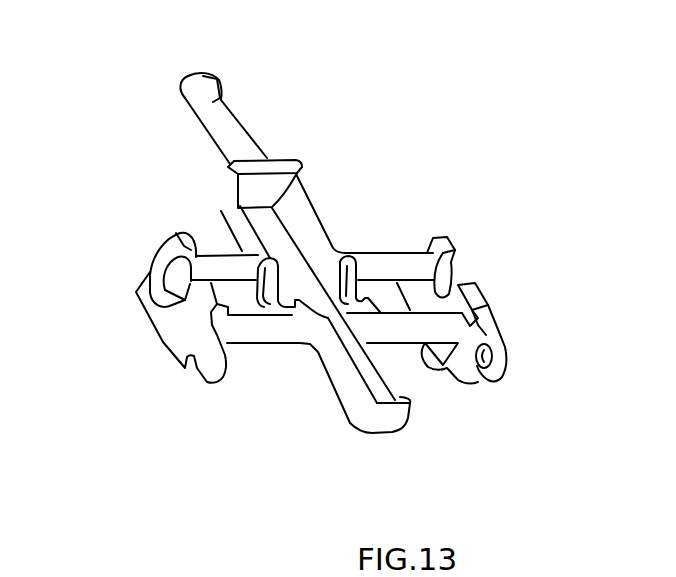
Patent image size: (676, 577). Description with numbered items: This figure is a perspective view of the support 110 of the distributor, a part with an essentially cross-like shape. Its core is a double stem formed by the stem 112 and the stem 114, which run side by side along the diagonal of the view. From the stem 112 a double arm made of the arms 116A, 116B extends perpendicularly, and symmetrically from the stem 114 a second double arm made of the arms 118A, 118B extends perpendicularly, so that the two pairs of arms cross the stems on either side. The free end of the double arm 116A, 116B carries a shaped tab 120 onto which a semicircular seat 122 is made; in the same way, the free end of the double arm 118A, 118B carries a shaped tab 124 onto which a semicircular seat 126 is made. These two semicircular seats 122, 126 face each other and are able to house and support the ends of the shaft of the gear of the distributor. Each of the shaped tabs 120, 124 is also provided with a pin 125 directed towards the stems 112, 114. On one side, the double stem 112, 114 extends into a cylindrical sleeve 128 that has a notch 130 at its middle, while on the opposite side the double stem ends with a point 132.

The support 110 is at (349, 87).
The stem 112 is at (226, 215).
The stem 114 is at (303, 203).
The arm 116A is at (247, 328).
The arm 116B is at (203, 250).
The arm 118A is at (457, 380).
The arm 118B is at (382, 252).
The shaped tab 120 is at (163, 343).
The semicircular seat 122 is at (150, 273).
The shaped tab 124 is at (488, 307).
The pin 125 is at (505, 372).
The semicircular seat 126 is at (451, 270).
The cylindrical sleeve 128 is at (233, 108).
The notch 130 is at (210, 75).
The point 132 is at (393, 423).